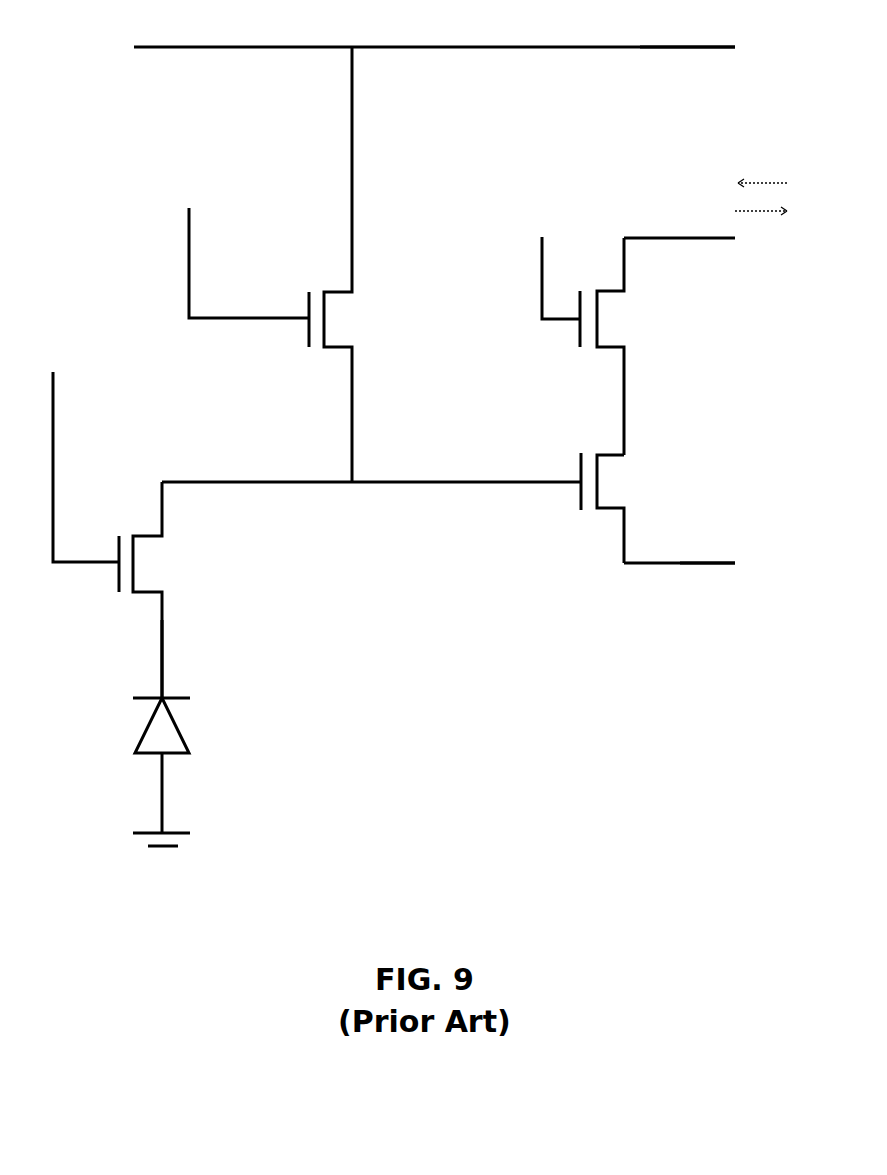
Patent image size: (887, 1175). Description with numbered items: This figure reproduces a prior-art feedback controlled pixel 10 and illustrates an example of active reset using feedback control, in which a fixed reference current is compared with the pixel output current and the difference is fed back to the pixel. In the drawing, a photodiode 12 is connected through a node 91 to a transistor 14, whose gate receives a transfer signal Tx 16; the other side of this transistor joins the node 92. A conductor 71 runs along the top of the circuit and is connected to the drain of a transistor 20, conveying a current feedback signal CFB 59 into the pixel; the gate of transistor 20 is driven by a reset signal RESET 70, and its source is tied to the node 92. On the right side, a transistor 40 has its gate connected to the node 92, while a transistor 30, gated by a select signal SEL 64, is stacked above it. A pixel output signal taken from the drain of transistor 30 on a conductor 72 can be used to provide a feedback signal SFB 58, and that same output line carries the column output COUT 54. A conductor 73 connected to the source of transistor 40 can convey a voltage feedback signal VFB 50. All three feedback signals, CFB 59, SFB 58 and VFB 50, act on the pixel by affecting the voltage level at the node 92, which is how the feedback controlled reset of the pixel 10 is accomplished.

The conductor CON1 71 is at (492, 45).
The current feedback signal CFB 59 is at (695, 34).
The reset signal 70 is at (225, 251).
The transistor M2 20 is at (348, 264).
The select signal SEL 64 is at (540, 266).
The feedback signal SFB 58 is at (721, 183).
The column output COUT 54 is at (712, 211).
The conductor CON2 72 is at (658, 240).
The transistor M3 30 is at (619, 346).
The transfer signal Tx 16 is at (75, 454).
The node N2 92 is at (355, 485).
The transistor M4 40 is at (620, 508).
The conductor CON3 73 is at (703, 561).
The voltage feedback signal VFB 50 is at (711, 576).
The transfer transistor M1 14 is at (157, 590).
The node N1 91 is at (164, 642).
The photodiode 12 is at (190, 742).
The pixel 10 is at (400, 826).